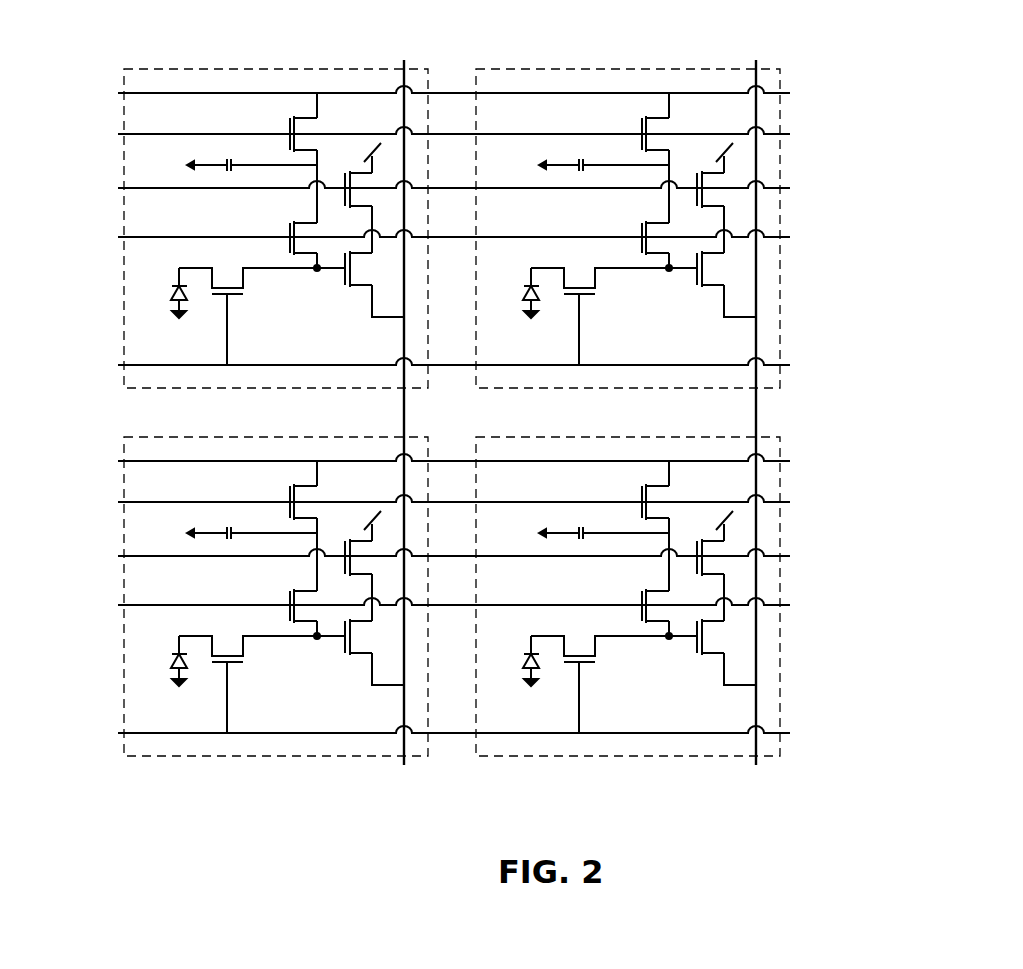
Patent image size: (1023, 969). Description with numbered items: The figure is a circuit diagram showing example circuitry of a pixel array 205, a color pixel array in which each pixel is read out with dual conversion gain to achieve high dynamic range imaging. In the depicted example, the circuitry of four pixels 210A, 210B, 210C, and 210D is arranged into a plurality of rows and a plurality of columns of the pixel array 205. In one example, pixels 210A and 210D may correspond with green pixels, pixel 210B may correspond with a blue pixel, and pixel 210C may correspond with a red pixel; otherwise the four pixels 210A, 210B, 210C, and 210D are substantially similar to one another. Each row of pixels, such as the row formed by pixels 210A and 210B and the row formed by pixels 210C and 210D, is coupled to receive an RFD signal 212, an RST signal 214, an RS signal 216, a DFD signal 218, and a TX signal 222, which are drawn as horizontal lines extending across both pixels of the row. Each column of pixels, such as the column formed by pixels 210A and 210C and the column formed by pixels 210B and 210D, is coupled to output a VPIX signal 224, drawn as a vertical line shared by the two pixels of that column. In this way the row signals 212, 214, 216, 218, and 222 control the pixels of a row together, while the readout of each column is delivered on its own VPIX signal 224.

The pixel array 205 is at (993, 62).
The pixel 210A is at (332, 68).
The pixel 210B is at (703, 68).
The pixel 210C is at (123, 631).
The pixel 210D is at (512, 758).
The RFD signal 212 is at (863, 89).
The RST signal 214 is at (866, 131).
The RS signal 216 is at (853, 186).
The DFD signal 218 is at (863, 236).
The TX signal 222 is at (850, 363).
The VPIX signal 224 is at (380, 800).